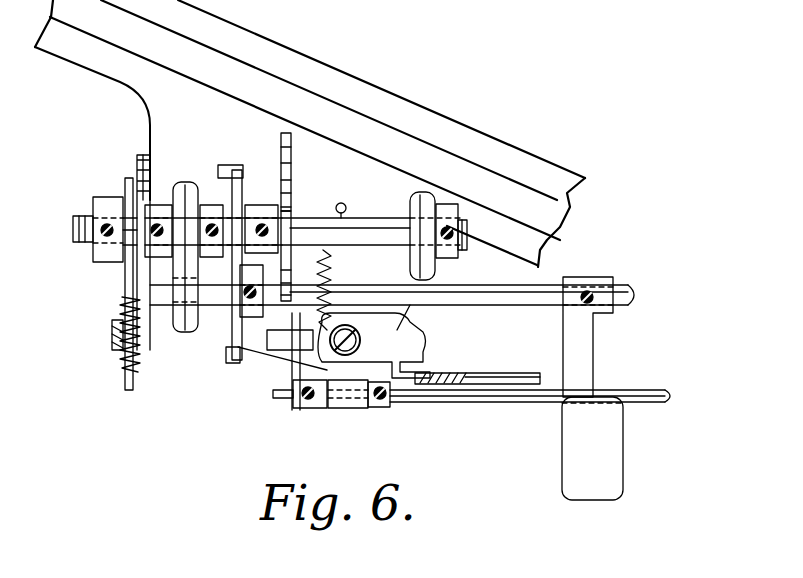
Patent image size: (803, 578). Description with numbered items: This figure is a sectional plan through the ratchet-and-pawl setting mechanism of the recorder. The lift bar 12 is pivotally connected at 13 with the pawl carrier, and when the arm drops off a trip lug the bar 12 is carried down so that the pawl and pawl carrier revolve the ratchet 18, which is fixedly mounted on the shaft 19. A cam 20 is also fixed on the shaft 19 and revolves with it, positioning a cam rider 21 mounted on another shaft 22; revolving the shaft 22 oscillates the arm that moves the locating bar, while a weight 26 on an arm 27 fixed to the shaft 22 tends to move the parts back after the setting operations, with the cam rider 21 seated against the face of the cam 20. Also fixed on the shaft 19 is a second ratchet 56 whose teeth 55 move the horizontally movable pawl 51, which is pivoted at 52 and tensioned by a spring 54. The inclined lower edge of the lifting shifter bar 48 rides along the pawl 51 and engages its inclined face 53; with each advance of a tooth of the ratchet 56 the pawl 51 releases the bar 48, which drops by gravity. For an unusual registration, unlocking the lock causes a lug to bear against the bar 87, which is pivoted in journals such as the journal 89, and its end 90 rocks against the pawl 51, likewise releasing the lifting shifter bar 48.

The lift bar 12 is at (122, 313).
The pivotal connection 13 is at (112, 343).
The ratchet 18 is at (137, 157).
The shaft 19 is at (73, 232).
The cam 20 is at (200, 182).
The cam rider 21 is at (240, 170).
The shaft 22 is at (350, 292).
The weight 26 is at (562, 452).
The arm 27 is at (593, 357).
The lifting shifter bar 48 is at (490, 373).
The horizontally movable pawl 51 is at (427, 340).
The pivot 52 is at (361, 340).
The inclined face 53 is at (430, 365).
The spring 54 is at (312, 290).
The teeth 55 is at (291, 190).
The ratchet 56 is at (291, 162).
The bar 87 is at (437, 407).
The journal 89 is at (343, 412).
The end of bar 90 is at (292, 374).